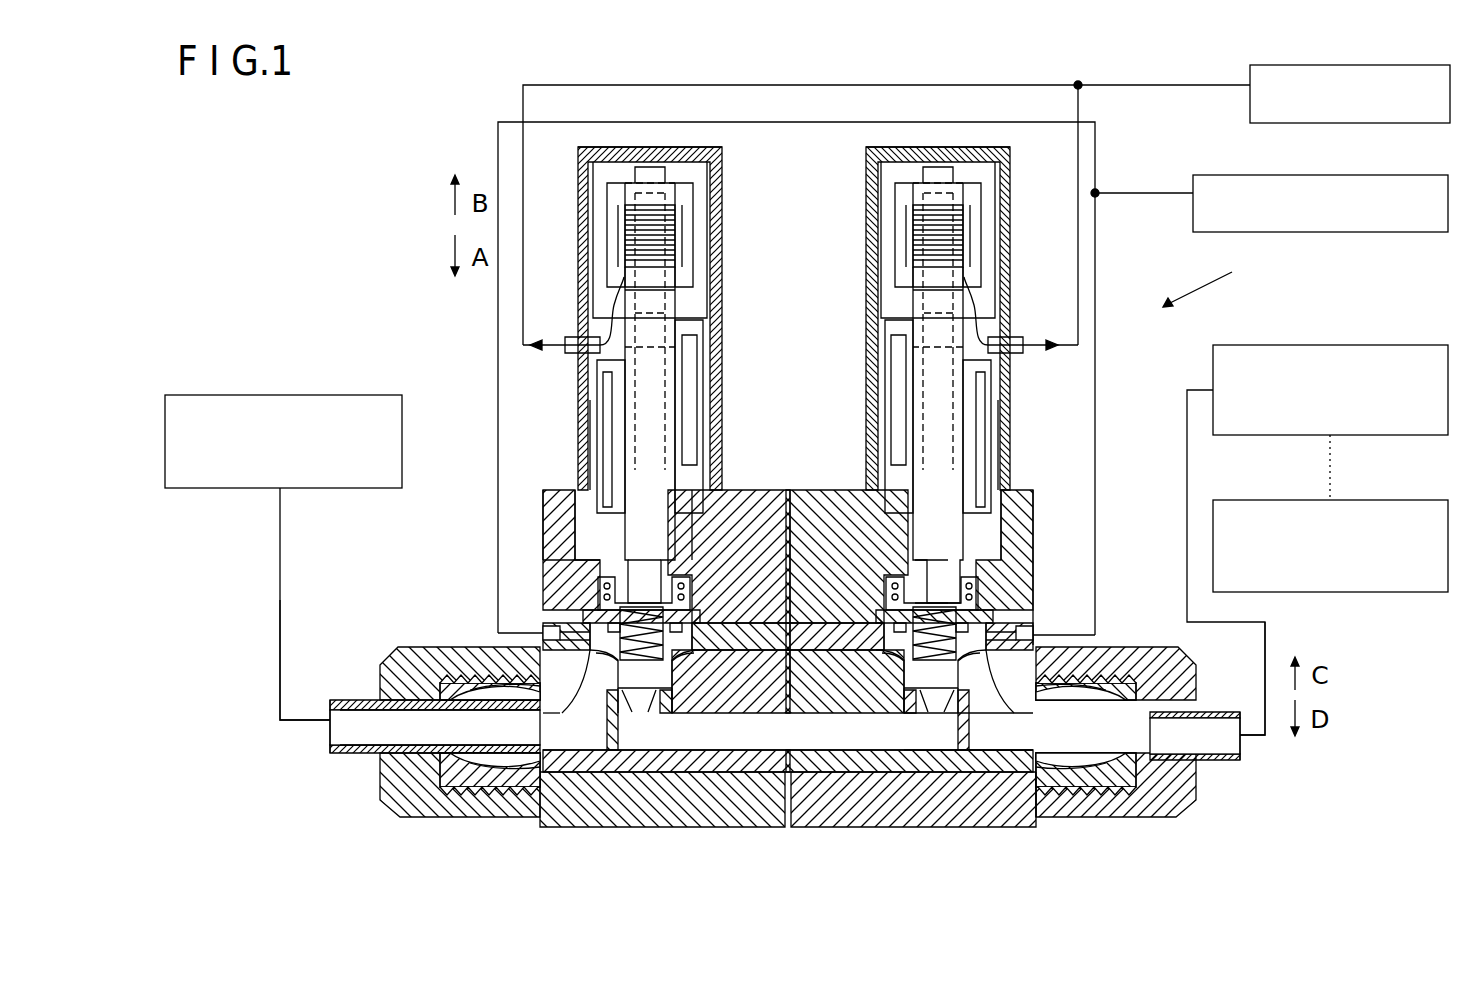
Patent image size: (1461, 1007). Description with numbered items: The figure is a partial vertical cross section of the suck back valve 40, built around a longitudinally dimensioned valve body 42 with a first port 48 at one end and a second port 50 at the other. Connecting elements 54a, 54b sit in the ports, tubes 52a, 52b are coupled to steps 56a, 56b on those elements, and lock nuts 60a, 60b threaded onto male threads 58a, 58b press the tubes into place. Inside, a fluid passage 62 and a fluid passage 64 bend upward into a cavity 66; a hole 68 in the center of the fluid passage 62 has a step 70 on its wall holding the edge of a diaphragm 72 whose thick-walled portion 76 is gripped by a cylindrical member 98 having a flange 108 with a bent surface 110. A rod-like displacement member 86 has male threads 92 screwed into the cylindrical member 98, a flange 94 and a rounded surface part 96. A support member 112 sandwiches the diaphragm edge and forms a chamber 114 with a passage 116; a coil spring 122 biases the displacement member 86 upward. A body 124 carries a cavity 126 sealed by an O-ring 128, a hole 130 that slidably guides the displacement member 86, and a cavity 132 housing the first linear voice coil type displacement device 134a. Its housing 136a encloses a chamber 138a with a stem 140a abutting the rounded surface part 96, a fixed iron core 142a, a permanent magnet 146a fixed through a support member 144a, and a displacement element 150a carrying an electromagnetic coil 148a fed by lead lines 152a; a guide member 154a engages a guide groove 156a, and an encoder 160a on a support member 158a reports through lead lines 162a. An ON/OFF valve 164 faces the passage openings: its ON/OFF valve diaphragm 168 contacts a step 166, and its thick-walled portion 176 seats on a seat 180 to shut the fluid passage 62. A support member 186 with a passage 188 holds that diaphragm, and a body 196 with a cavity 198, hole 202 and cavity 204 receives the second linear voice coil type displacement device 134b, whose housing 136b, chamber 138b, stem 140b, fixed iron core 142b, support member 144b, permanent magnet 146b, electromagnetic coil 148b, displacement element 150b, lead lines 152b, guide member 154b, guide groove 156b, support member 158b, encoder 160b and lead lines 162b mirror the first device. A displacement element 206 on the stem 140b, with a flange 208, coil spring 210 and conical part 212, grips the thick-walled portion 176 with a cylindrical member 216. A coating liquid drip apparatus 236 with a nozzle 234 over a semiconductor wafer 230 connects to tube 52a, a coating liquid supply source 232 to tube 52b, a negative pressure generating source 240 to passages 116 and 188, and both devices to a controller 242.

The suck back valve 40 is at (1215, 279).
The valve body 42 is at (745, 790).
The first port 48 is at (1240, 748).
The second port 50 is at (340, 725).
The tube 52a is at (1200, 712).
The tube 52b is at (350, 712).
The connecting element 54a is at (1070, 760).
The connecting element 54b is at (495, 760).
The step 56a is at (1090, 770).
The step 56b is at (470, 770).
The male thread 58a is at (1115, 790).
The male thread 58b is at (440, 790).
The lock nut 60a is at (1160, 812).
The lock nut 60b is at (385, 788).
The fluid passage 62 is at (713, 739).
The fluid passage 64 is at (473, 739).
The cavity 66 is at (565, 790).
The hole 68 is at (880, 790).
The step 70 is at (890, 712).
The diaphragm 72 is at (940, 700).
The thick-walled portion 76 is at (896, 692).
The displacement member 86 is at (915, 560).
The male threads 92 is at (1035, 585).
The flange 94 is at (1035, 545).
The rounded surface part 96 is at (930, 560).
The cylindrical member 98 is at (1015, 588).
The flange 108 is at (1012, 770).
The bent surface 110 is at (955, 714).
The support member 112 is at (1045, 636).
The chamber 114 is at (800, 790).
The passage 116 is at (1035, 628).
The coil spring 122 is at (845, 522).
The body 124 is at (1020, 508).
The cavity 126 is at (1010, 548).
The O-ring 128 is at (968, 730).
The hole 130 is at (1015, 522).
The cavity 132 is at (1010, 495).
The first linear voice coil type displacement device 134a is at (980, 147).
The second linear voice coil type displacement device 134b is at (690, 147).
The housing 136a is at (1000, 148).
The housing 136b is at (710, 148).
The chamber 138a is at (888, 250).
The chamber 138b is at (700, 250).
The stem 140a is at (935, 367).
The stem 140b is at (650, 367).
The fixed iron core 142a is at (938, 172).
The fixed iron core 142b is at (650, 172).
The support member 144a is at (898, 222).
The support member 144b is at (690, 222).
The permanent magnet 146a is at (893, 198).
The permanent magnet 146b is at (695, 198).
The electromagnetic coil 148a is at (960, 275).
The electromagnetic coil 148b is at (600, 275).
The displacement element (bobbin) 150a is at (958, 292).
The displacement element (bobbin) 150b is at (628, 292).
The lead lines 152a is at (978, 340).
The lead lines 152b is at (600, 345).
The guide member 154a is at (905, 382).
The guide member 154b is at (680, 382).
The guide groove 156a is at (895, 412).
The guide groove 156b is at (690, 412).
The support member 158a is at (985, 405).
The support member 158b is at (600, 405).
The encoder 160a is at (996, 430).
The encoder 160b is at (592, 428).
The lead lines 162a is at (985, 372).
The lead lines 162b is at (603, 372).
The ON/OFF valve 164 is at (548, 527).
The step 166 is at (557, 725).
The ON/OFF valve diaphragm 168 is at (686, 692).
The thick-walled portion 176 is at (642, 700).
The seat 180 is at (625, 714).
The support member 186 is at (598, 605).
The passage 188 is at (540, 633).
The body 196 is at (548, 508).
The cavity 198 is at (555, 580).
The hole 202 is at (548, 555).
The cavity 204 is at (543, 524).
The displacement element 206 is at (650, 555).
The flange 208 is at (735, 530).
The coil spring 210 is at (720, 500).
The conical part 212 is at (790, 495).
The cylindrical member 216 is at (555, 600).
The semiconductor wafer 230 is at (1350, 592).
The coating liquid supply source 232 is at (290, 395).
The nozzle 234 is at (1340, 452).
The coating liquid drip apparatus 236 is at (1350, 345).
The negative pressure generating source 240 is at (1310, 232).
The controller 242 is at (1305, 123).